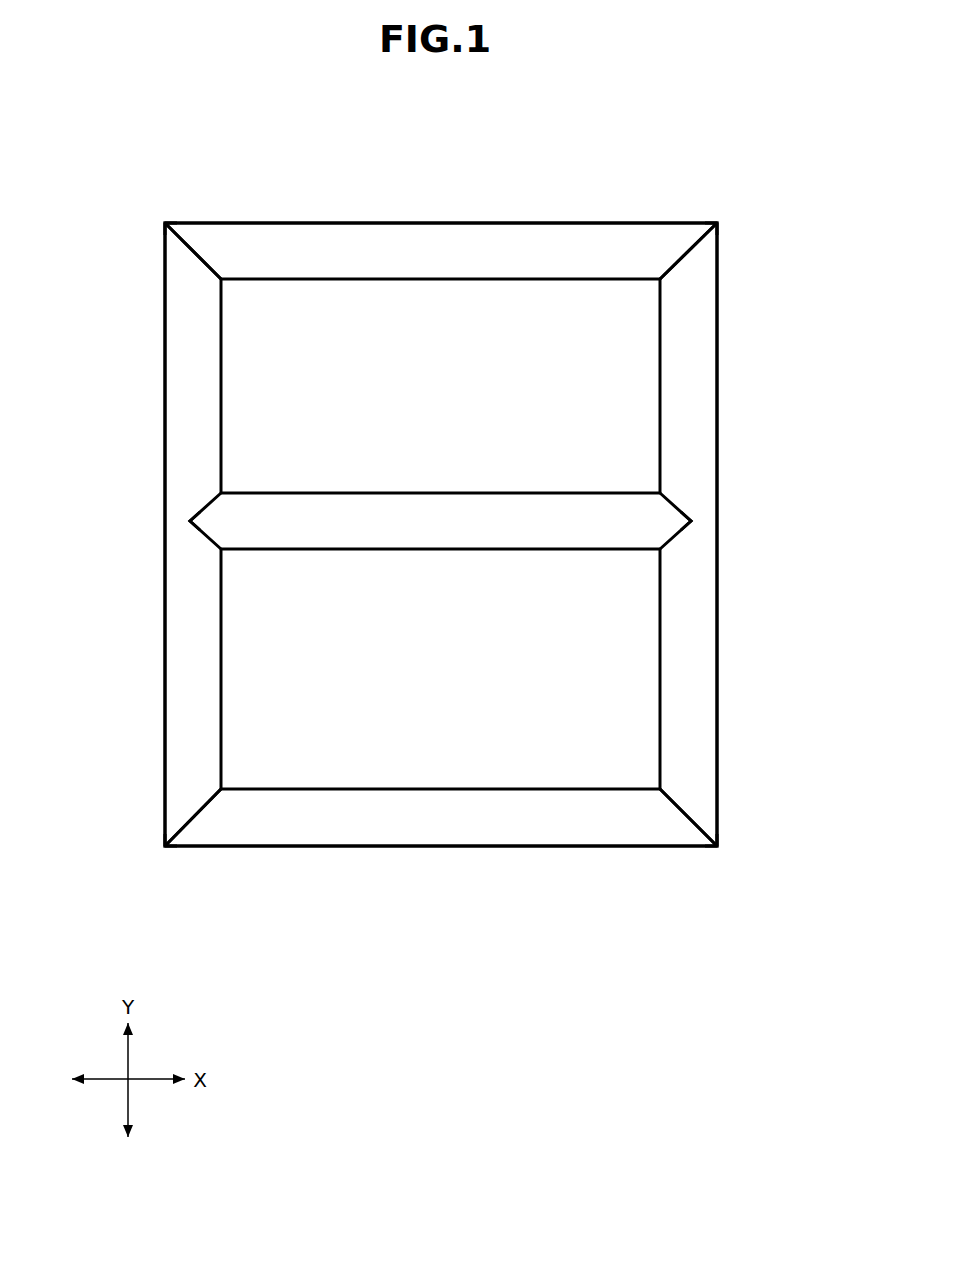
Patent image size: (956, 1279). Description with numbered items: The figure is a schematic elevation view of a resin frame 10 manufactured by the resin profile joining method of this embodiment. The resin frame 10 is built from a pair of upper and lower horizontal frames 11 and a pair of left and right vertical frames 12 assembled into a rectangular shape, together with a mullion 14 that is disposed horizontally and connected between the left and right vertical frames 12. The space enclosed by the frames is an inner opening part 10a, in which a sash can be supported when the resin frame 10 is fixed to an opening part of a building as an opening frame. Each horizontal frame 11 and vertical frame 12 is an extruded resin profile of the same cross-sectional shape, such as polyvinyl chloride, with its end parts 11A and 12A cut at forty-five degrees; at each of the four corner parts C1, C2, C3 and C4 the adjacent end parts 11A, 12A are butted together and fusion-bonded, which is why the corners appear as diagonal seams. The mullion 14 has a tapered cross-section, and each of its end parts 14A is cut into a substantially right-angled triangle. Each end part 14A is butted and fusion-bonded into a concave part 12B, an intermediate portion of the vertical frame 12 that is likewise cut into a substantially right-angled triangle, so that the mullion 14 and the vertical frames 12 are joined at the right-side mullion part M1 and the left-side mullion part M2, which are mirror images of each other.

The resin frame 10 is at (121, 113).
The inner opening part 10a is at (538, 282).
The horizontal frame 11 is at (449, 240).
The end part of horizontal frame 11A is at (190, 250).
The vertical frame 12 is at (170, 388).
The end part of vertical frame 12A is at (205, 262).
The concave part 12B is at (212, 500).
The mullion 14 is at (439, 494).
The end part of mullion 14A is at (202, 537).
The upper right corner part C1 is at (727, 216).
The corner part C2 is at (155, 216).
The corner part C3 is at (150, 853).
The corner part C4 is at (732, 853).
The mullion part on the right side M1 is at (700, 496).
The mullion part on the left side M2 is at (182, 496).